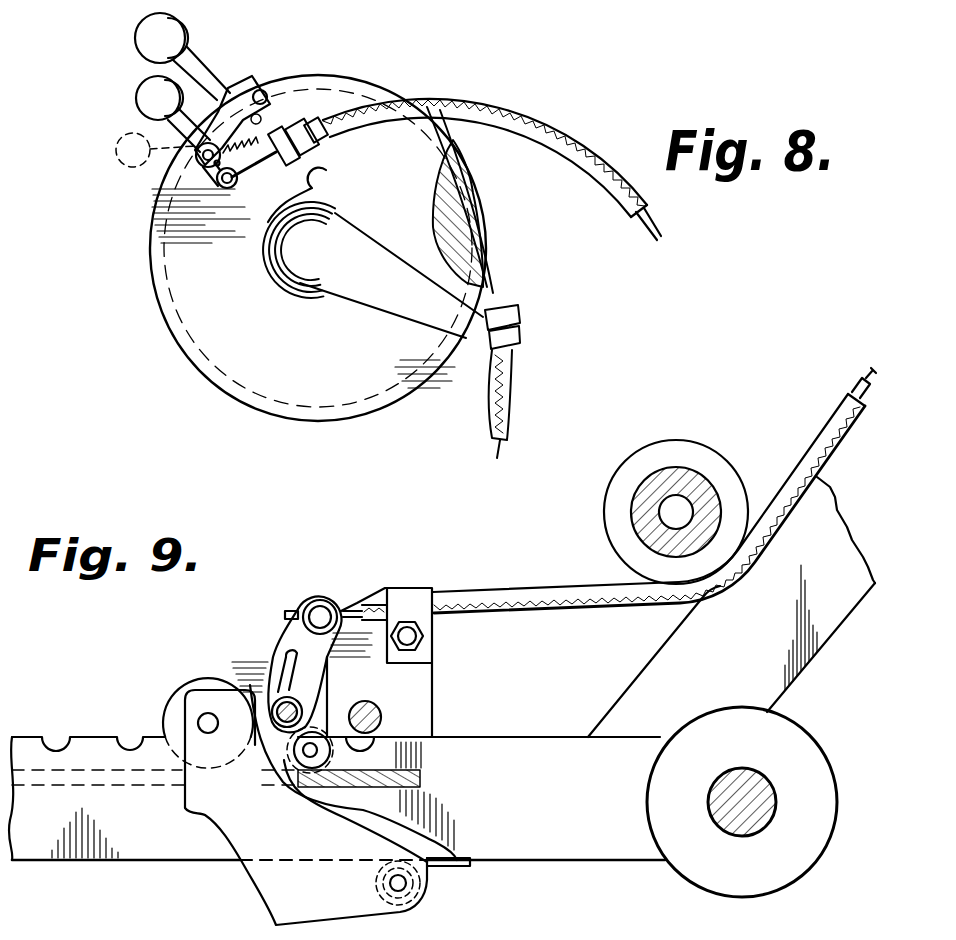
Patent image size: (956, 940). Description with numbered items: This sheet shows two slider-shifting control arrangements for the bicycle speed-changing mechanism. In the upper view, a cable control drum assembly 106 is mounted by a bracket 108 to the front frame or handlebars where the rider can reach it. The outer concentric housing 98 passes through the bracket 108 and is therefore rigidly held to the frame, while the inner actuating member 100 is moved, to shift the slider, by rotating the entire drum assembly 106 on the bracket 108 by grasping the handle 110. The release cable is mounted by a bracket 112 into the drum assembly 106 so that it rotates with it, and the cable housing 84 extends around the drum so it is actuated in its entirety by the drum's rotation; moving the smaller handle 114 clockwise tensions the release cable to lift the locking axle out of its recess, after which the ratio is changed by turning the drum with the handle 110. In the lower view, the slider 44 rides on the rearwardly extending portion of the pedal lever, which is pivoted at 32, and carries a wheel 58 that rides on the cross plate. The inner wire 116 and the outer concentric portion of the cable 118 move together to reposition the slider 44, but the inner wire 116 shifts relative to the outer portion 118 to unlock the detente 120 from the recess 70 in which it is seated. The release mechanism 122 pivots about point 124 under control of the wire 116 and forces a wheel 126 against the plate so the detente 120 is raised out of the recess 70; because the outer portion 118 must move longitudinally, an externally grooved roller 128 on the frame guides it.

In FIG. 9, the pivot 32 is at (746, 809).
In FIG. 9, the slider 44 is at (300, 884).
In FIG. 9, the wheel 58 is at (206, 690).
In FIG. 9, the recess 70 is at (130, 737).
In FIG. 8, the cable housing 84 is at (556, 135).
In FIG. 8, the outer concentric housing 98 is at (518, 390).
In FIG. 8, the inner actuating member 100 is at (503, 292).
In FIG. 8, the cable control drum assembly 106 is at (212, 290).
In FIG. 8, the bracket 108 is at (392, 271).
In FIG. 8, the handle 110 is at (147, 42).
In FIG. 8, the bracket 112 is at (295, 127).
In FIG. 8, the smaller handle 114 is at (150, 108).
In FIG. 9, the inner wire 116 is at (330, 594).
In FIG. 9, the outer concentric portion of the cable 118 is at (557, 587).
In FIG. 9, the detente 120 is at (382, 713).
In FIG. 9, the release mechanism 122 is at (280, 637).
In FIG. 9, the pivot point 124 is at (302, 703).
In FIG. 9, the wheel 126 is at (323, 790).
In FIG. 9, the externally grooved roller 128 is at (712, 465).